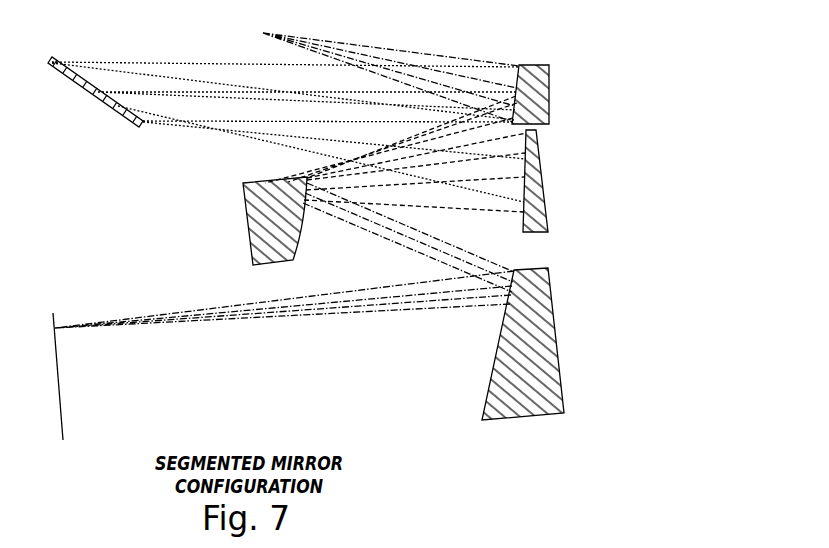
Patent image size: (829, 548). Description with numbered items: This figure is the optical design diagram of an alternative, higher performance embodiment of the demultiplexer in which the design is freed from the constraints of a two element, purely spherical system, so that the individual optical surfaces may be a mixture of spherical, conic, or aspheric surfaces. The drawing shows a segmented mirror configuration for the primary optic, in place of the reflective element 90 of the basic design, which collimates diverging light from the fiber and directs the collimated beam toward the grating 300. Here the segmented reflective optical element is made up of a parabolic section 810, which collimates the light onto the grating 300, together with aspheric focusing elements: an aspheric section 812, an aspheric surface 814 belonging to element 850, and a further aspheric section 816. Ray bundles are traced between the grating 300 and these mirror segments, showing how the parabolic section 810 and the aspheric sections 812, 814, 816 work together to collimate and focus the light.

The reflective element 90 is at (560, 263).
The grating 300 is at (83, 90).
The parabolic section 810 is at (550, 84).
The aspheric section 812 is at (540, 176).
The aspheric surface 814 is at (295, 250).
The aspheric section 816 is at (556, 334).
The element 850 is at (273, 231).